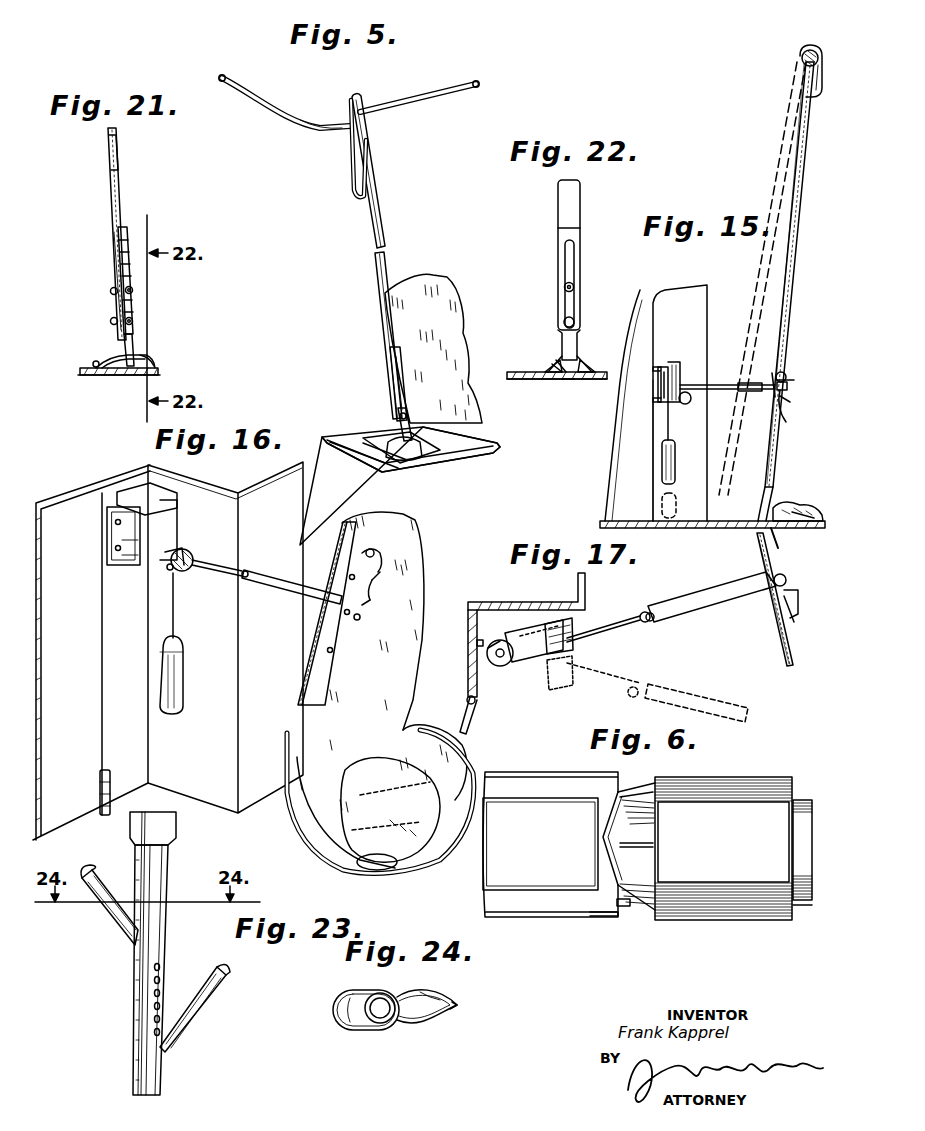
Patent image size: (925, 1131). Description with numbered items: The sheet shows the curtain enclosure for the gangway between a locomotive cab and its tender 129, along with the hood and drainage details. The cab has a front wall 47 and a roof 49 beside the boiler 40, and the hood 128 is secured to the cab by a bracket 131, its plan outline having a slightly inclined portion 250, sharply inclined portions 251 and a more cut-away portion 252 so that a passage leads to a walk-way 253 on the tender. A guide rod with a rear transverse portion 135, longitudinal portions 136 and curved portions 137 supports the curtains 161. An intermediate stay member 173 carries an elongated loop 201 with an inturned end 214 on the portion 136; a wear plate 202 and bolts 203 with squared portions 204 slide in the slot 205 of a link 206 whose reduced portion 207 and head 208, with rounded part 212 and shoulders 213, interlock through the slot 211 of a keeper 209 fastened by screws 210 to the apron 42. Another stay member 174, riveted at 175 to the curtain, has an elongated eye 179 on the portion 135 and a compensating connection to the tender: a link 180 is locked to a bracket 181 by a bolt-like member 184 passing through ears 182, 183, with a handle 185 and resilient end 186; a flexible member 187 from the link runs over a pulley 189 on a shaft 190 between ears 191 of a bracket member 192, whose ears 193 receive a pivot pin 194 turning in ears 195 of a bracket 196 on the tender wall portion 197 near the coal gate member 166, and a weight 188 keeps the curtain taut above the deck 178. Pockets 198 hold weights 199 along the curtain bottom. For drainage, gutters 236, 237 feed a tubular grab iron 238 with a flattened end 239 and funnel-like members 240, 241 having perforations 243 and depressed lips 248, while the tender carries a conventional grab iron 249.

In FIG. 6, the boiler 40 is at (804, 800).
In FIG. 21, the apron 42 is at (84, 377).
In FIG. 5, the apron 42 is at (497, 452).
In FIG. 22, the apron 42 is at (520, 381).
In FIG. 6, the front wall 47 is at (796, 920).
In FIG. 6, the roof 49 is at (740, 896).
In FIG. 6, the hood 128 is at (650, 806).
In FIG. 6, the tender 129 is at (542, 880).
In FIG. 6, the bracket 131 is at (640, 845).
In FIG. 5, the rear transversely extending portion 135 is at (262, 106).
In FIG. 15, the rear transversely extending portion 135 is at (808, 50).
In FIG. 5, the longitudinally extending portions 136 is at (430, 108).
In FIG. 5, the curved portions 137 is at (315, 133).
In FIG. 21, the curtain 161 is at (117, 160).
In FIG. 5, the curtain 161 is at (455, 292).
In FIG. 15, the curtain 161 is at (780, 268).
In FIG. 16, the curtain 161 is at (296, 812).
In FIG. 17, the curtain 161 is at (768, 560).
In FIG. 15, the coal gate member 166 is at (650, 340).
In FIG. 16, the coal gate member 166 is at (116, 730).
In FIG. 17, the coal gate member 166 is at (464, 712).
In FIG. 21, the intermediate stay member 173 is at (112, 190).
In FIG. 5, the intermediate stay member 173 is at (388, 262).
In FIG. 22, the intermediate stay member 173 is at (582, 198).
In FIG. 15, the intermediate stay member 174 is at (752, 310).
In FIG. 16, the intermediate stay member 174 is at (335, 690).
In FIG. 17, the intermediate stay member 174 is at (774, 612).
In FIG. 16, the rivets 175 is at (334, 650).
In FIG. 15, the deck 178 is at (700, 529).
In FIG. 16, the deck 178 is at (300, 840).
In FIG. 15, the elongated eye 179 is at (818, 97).
In FIG. 15, the link 180 is at (734, 383).
In FIG. 16, the link 180 is at (284, 578).
In FIG. 17, the link 180 is at (694, 596).
In FIG. 15, the bracket 181 is at (768, 392).
In FIG. 16, the bracket 181 is at (352, 608).
In FIG. 17, the bracket 181 is at (792, 620).
In FIG. 15, the pivot ears 182 is at (786, 412).
In FIG. 16, the pivot ears 182 is at (374, 588).
In FIG. 15, the ear 183 is at (786, 370).
In FIG. 16, the ear 183 is at (376, 548).
In FIG. 17, the ear 183 is at (786, 577).
In FIG. 15, the slidable bolt-like member 184 is at (788, 378).
In FIG. 16, the slidable bolt-like member 184 is at (380, 574).
In FIG. 15, the handle portion 185 is at (789, 386).
In FIG. 16, the handle portion 185 is at (396, 552).
In FIG. 17, the handle portion 185 is at (798, 604).
In FIG. 15, the resilient end portion 186 is at (789, 397).
In FIG. 16, the resilient end portion 186 is at (372, 602).
In FIG. 15, the flexible member 187 is at (712, 384).
In FIG. 16, the flexible member 187 is at (224, 566).
In FIG. 17, the flexible member 187 is at (602, 634).
In FIG. 15, the weight 188 is at (662, 470).
In FIG. 16, the weight 188 is at (185, 680).
In FIG. 16, the pulley 189 is at (190, 568).
In FIG. 17, the pulley 189 is at (596, 630).
In FIG. 15, the shaft 190 is at (691, 400).
In FIG. 16, the shaft 190 is at (168, 571).
In FIG. 15, the ears 191 is at (670, 414).
In FIG. 16, the ears 191 is at (188, 548).
In FIG. 17, the ears 191 is at (562, 622).
In FIG. 15, the bracket member 192 is at (682, 372).
In FIG. 16, the bracket member 192 is at (180, 520).
In FIG. 17, the bracket member 192 is at (530, 622).
In FIG. 15, the ears 193 is at (668, 368).
In FIG. 16, the ears 193 is at (133, 500).
In FIG. 17, the ears 193 is at (503, 642).
In FIG. 15, the pivot pin 194 is at (661, 388).
In FIG. 16, the pivot pin 194 is at (178, 497).
In FIG. 17, the pivot pin 194 is at (487, 656).
In FIG. 15, the ears 195 is at (654, 370).
In FIG. 16, the ears 195 is at (118, 526).
In FIG. 16, the bracket 196 is at (114, 520).
In FIG. 17, the bracket 196 is at (476, 642).
In FIG. 15, the wall portion 197 is at (652, 446).
In FIG. 16, the wall portion 197 is at (108, 643).
In FIG. 17, the wall portion 197 is at (468, 614).
In FIG. 15, the pockets 198 is at (786, 506).
In FIG. 16, the pockets 198 is at (455, 760).
In FIG. 15, the weights 199 is at (810, 512).
In FIG. 16, the weights 199 is at (385, 870).
In FIG. 5, the elongated loop 201 is at (381, 153).
In FIG. 21, the wear plate 202 is at (118, 268).
In FIG. 5, the wear plate 202 is at (401, 350).
In FIG. 21, the bolts 203 is at (131, 318).
In FIG. 5, the bolts 203 is at (407, 412).
In FIG. 22, the bolts 203 is at (575, 290).
In FIG. 21, the squared portions 204 is at (132, 288).
In FIG. 21, the slot 205 is at (126, 252).
In FIG. 5, the slot 205 is at (404, 368).
In FIG. 22, the slot 205 is at (576, 254).
In FIG. 21, the link 206 is at (134, 346).
In FIG. 5, the link 206 is at (402, 428).
In FIG. 22, the link 206 is at (580, 338).
In FIG. 21, the reduced portion 207 is at (120, 360).
In FIG. 5, the reduced portion 207 is at (378, 442).
In FIG. 22, the reduced portion 207 is at (586, 362).
In FIG. 21, the head 208 is at (124, 377).
In FIG. 22, the head 208 is at (578, 380).
In FIG. 5, the keeper 209 is at (385, 452).
In FIG. 22, the keeper 209 is at (556, 366).
In FIG. 21, the screws 210 is at (92, 362).
In FIG. 5, the screws 210 is at (380, 463).
In FIG. 21, the slot 211 is at (150, 358).
In FIG. 5, the slot 211 is at (418, 446).
In FIG. 22, the slot 211 is at (556, 364).
In FIG. 22, the rounded lower part 212 is at (568, 381).
In FIG. 22, the shoulders 213 is at (582, 366).
In FIG. 5, the inturned end 214 is at (352, 193).
In FIG. 6, the gutter 236 is at (755, 777).
In FIG. 6, the gutter 237 is at (628, 788).
In FIG. 23, the grab iron 238 is at (168, 880).
In FIG. 24, the grab iron 238 is at (392, 996).
In FIG. 23, the flattened end portion 239 is at (176, 830).
In FIG. 23, the funnel-like member 240 is at (112, 912).
In FIG. 24, the funnel-like member 240 is at (358, 1030).
In FIG. 23, the funnel-like member 241 is at (196, 1006).
In FIG. 24, the funnel-like member 241 is at (432, 1027).
In FIG. 23, the perforations 243 is at (145, 913).
In FIG. 24, the perforations 243 is at (355, 996).
In FIG. 23, the depressed lips 248 is at (88, 866).
In FIG. 24, the depressed lips 248 is at (458, 1005).
In FIG. 6, the grab iron 249 is at (620, 908).
In FIG. 6, the inclined portion 250 is at (650, 790).
In FIG. 6, the inclined portion 251 is at (586, 862).
In FIG. 6, the inclined portion 252 is at (650, 888).
In FIG. 6, the walk-way 253 is at (513, 910).